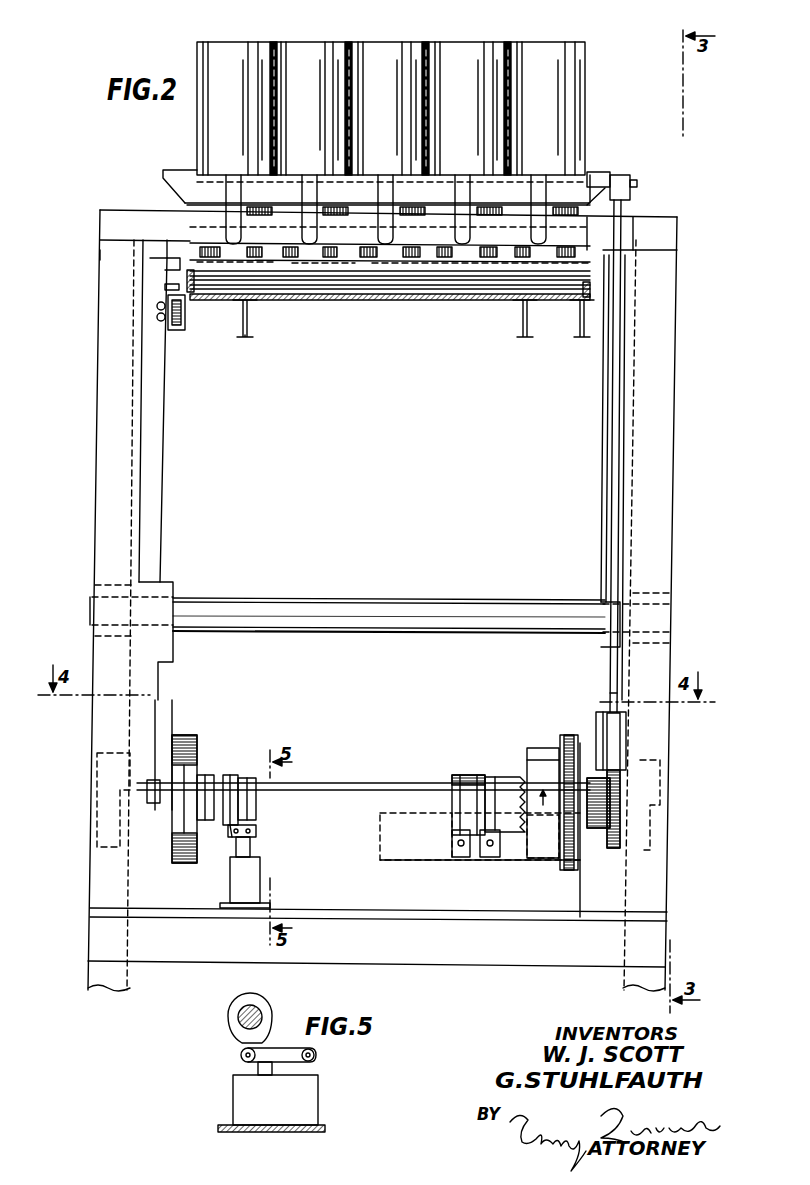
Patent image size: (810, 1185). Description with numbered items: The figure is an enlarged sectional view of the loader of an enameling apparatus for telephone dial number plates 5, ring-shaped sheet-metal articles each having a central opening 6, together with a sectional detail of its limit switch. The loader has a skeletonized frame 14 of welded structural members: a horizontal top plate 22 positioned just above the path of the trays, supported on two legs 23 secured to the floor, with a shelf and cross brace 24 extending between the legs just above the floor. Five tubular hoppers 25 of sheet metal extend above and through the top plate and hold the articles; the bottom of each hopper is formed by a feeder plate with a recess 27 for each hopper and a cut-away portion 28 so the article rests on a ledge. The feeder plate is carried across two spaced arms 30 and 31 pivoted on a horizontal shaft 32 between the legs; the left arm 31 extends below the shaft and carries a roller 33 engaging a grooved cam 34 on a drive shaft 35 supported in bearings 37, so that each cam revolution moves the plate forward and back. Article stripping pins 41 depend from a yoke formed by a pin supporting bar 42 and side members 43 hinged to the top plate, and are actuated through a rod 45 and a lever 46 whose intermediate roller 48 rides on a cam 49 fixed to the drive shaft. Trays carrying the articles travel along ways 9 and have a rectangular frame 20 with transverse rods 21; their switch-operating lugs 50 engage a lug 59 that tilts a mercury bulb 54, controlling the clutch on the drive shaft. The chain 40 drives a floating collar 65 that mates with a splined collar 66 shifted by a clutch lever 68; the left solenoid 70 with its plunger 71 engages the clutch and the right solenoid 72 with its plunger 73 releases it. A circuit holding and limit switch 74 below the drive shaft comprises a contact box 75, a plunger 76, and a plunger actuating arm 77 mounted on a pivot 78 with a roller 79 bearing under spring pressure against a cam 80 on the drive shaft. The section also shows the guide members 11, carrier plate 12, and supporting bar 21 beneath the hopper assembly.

In FIG. 2, the telephone dial number plate 5 is at (441, 264).
In FIG. 2, the central opening 6 is at (242, 264).
In FIG. 2, the ways 9 is at (245, 332).
In FIG. 2, the I-beam guide 11 is at (255, 308).
In FIG. 2, the carrier plate 12 is at (373, 313).
In FIG. 2, the frame 14 is at (678, 388).
In FIG. 2, the rectangular frame 20 is at (195, 273).
In FIG. 2, the transverse cylindrical rods 21 is at (438, 305).
In FIG. 2, the horizontal top plate 22 is at (651, 230).
In FIG. 2, the legs 23 is at (112, 473).
In FIG. 2, the shelf and cross brace 24 is at (440, 975).
In FIG. 2, the tubular hoppers 25 is at (540, 45).
In FIG. 2, the recesses 27 is at (490, 263).
In FIG. 2, the cut-away portion 28 is at (485, 263).
In FIG. 2, the right arm 30 is at (605, 455).
In FIG. 2, the left arm 31 is at (160, 467).
In FIG. 2, the horizontal shaft 32 is at (335, 598).
In FIG. 2, the roller 33 is at (193, 785).
In FIG. 2, the grooved cam 34 is at (185, 740).
In FIG. 2, the drive shaft 35 is at (343, 785).
In FIG. 5, the drive shaft 35 is at (240, 1020).
In FIG. 2, the bearings 37 is at (97, 753).
In FIG. 2, the chain 40 is at (569, 736).
In FIG. 2, the article stripping pins 41 is at (273, 188).
In FIG. 2, the pin supporting bar 42 is at (210, 185).
In FIG. 2, the side member 43 is at (163, 170).
In FIG. 2, the rod 45 is at (610, 674).
In FIG. 2, the lever 46 is at (587, 730).
In FIG. 2, the intermediate roller 48 is at (617, 757).
In FIG. 2, the cam 49 is at (612, 777).
In FIG. 2, the switch-operating lugs 50 is at (165, 265).
In FIG. 2, the mercury containing bulb 54 is at (160, 308).
In FIG. 2, the lug 59 is at (163, 288).
In FIG. 2, the collar 65 is at (528, 748).
In FIG. 2, the collar 66 is at (495, 775).
In FIG. 2, the clutch lever 68 is at (467, 780).
In FIG. 2, the left solenoid 70 is at (400, 802).
In FIG. 2, the plunger 71 is at (460, 858).
In FIG. 2, the right solenoid 72 is at (520, 870).
In FIG. 2, the plunger 73 is at (490, 858).
In FIG. 2, the circuit holding and limit switch 74 is at (262, 873).
In FIG. 5, the circuit holding and limit switch 74 is at (233, 1097).
In FIG. 5, the contact box 75 is at (320, 1102).
In FIG. 2, the plunger 76 is at (250, 845).
In FIG. 5, the plunger 76 is at (258, 1066).
In FIG. 2, the plunger actuating arm 77 is at (257, 823).
In FIG. 5, the plunger actuating arm 77 is at (278, 1040).
In FIG. 5, the pivot 78 is at (314, 1055).
In FIG. 2, the roller 79 is at (230, 840).
In FIG. 5, the roller 79 is at (240, 1055).
In FIG. 2, the cam 80 is at (238, 772).
In FIG. 5, the cam 80 is at (242, 1008).